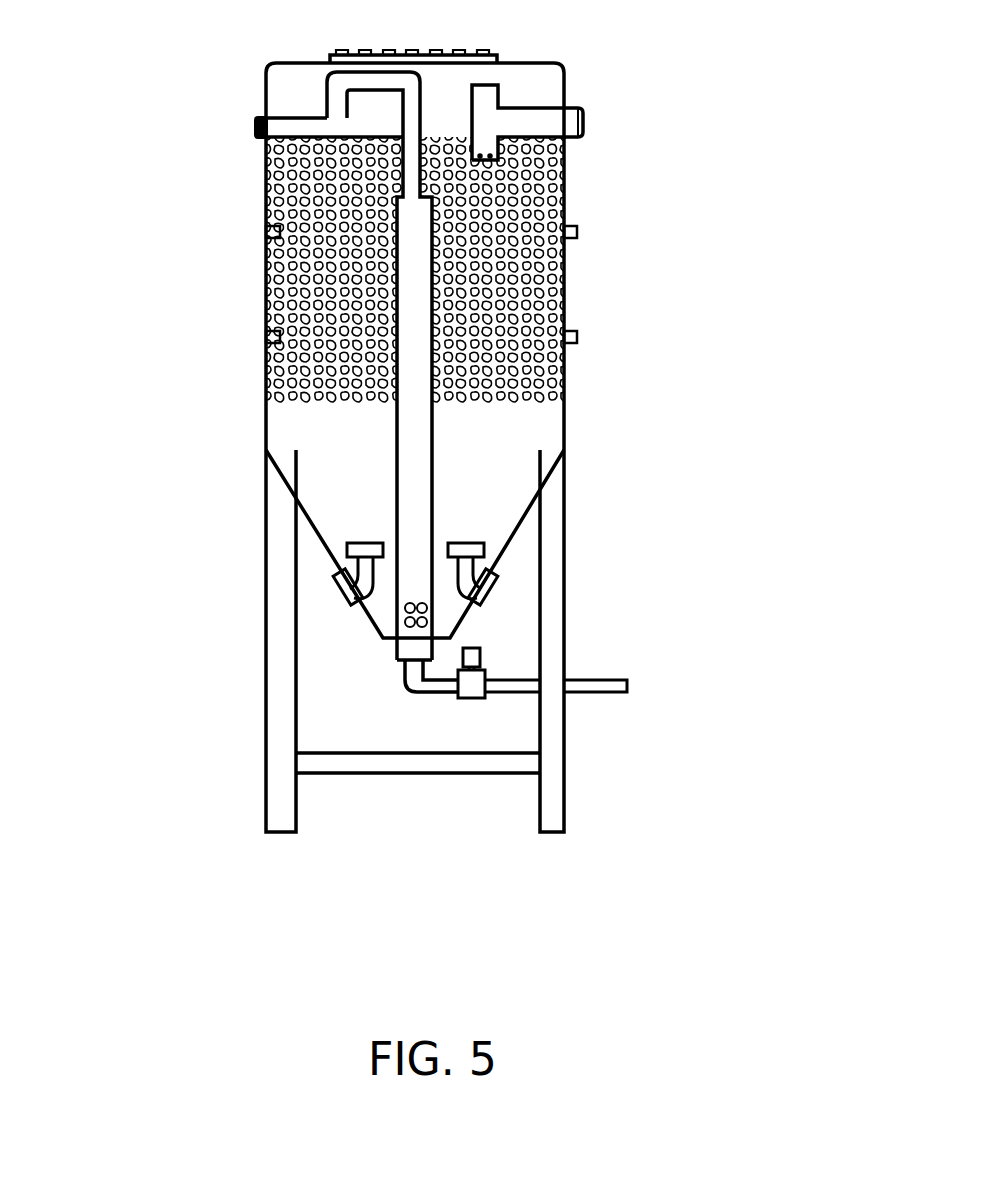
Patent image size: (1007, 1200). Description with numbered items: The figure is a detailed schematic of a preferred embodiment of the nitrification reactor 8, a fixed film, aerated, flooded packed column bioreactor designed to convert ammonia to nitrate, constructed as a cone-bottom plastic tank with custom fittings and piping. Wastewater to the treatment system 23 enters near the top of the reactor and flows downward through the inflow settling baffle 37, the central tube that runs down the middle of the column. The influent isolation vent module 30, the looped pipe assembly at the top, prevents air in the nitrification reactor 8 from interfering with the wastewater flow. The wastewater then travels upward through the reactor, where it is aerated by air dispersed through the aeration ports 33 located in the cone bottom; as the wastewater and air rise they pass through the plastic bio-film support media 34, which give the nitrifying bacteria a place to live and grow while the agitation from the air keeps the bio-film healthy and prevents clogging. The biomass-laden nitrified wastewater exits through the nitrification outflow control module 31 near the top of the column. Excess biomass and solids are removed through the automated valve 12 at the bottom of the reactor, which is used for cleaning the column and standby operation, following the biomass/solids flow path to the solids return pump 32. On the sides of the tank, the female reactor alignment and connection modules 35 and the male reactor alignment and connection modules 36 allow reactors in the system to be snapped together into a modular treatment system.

The nitrification reactor 8 is at (515, 190).
The automated valve 12 is at (485, 676).
The wastewater flow path through the treatment system 23 is at (248, 131).
The influent isolation vent module 30 is at (422, 77).
The nitrification outflow control module 31 is at (537, 108).
The biomass/solids flow path to solids return pump 32 is at (636, 686).
The aeration ports 33 is at (615, 593).
The plastic bio-film support media 34 is at (312, 186).
The reactor alignment and connection module (female) 35 is at (266, 337).
The reactor alignment and connection module (male) 36 is at (640, 337).
The inflow settling baffle 37 is at (417, 427).